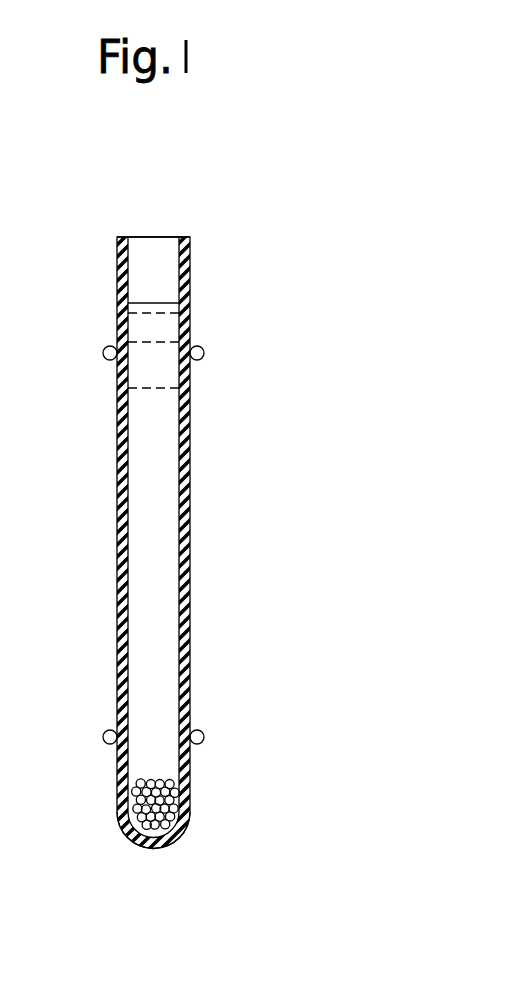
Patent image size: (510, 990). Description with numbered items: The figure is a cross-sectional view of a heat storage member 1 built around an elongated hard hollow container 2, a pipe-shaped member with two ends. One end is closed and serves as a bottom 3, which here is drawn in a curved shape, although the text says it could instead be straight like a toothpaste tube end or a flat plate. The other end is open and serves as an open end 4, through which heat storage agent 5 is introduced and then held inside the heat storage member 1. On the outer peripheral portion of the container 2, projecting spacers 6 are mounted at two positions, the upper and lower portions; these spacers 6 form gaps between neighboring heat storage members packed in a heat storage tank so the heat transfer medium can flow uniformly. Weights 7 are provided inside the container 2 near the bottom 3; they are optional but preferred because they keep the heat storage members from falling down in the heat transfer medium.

The heat storage member 1 is at (183, 218).
The elongated hard hollow container 2 is at (117, 537).
The bottom 3 is at (152, 849).
The open end 4 is at (149, 237).
The heat storage agent 5 is at (165, 498).
The projecting spacers 6 is at (116, 346).
The weights 7 is at (189, 796).